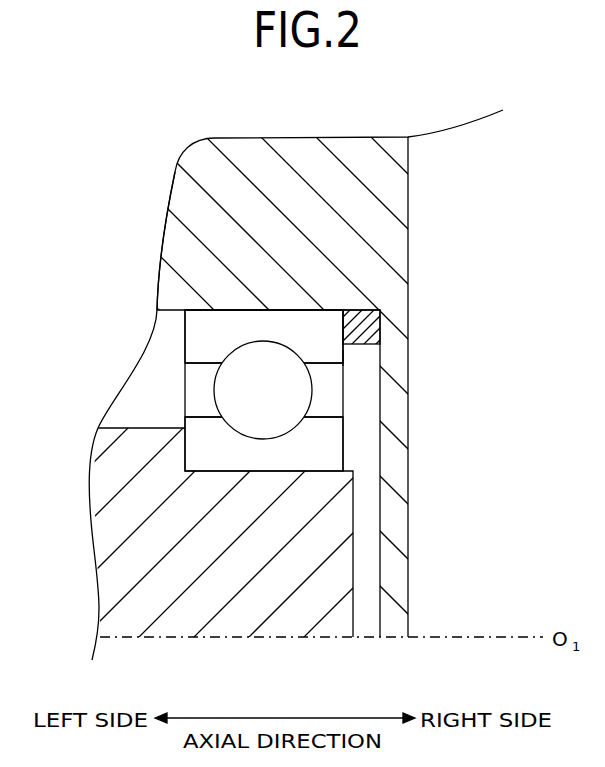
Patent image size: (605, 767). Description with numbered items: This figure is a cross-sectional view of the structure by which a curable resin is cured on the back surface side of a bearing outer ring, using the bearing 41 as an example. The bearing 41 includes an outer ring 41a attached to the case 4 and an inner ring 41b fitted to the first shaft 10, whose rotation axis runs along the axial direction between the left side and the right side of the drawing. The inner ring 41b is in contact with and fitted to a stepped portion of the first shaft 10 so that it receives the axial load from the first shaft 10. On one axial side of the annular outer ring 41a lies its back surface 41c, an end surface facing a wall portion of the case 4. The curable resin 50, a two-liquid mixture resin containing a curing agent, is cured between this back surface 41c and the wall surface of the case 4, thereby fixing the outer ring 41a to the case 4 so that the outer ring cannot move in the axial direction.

The case 4 is at (375, 152).
The first shaft 10 is at (115, 548).
The bearing 41 is at (269, 282).
The outer ring 41a is at (259, 325).
The inner ring 41b is at (207, 417).
The back surface 41c is at (342, 358).
The curable resin 50 is at (357, 340).